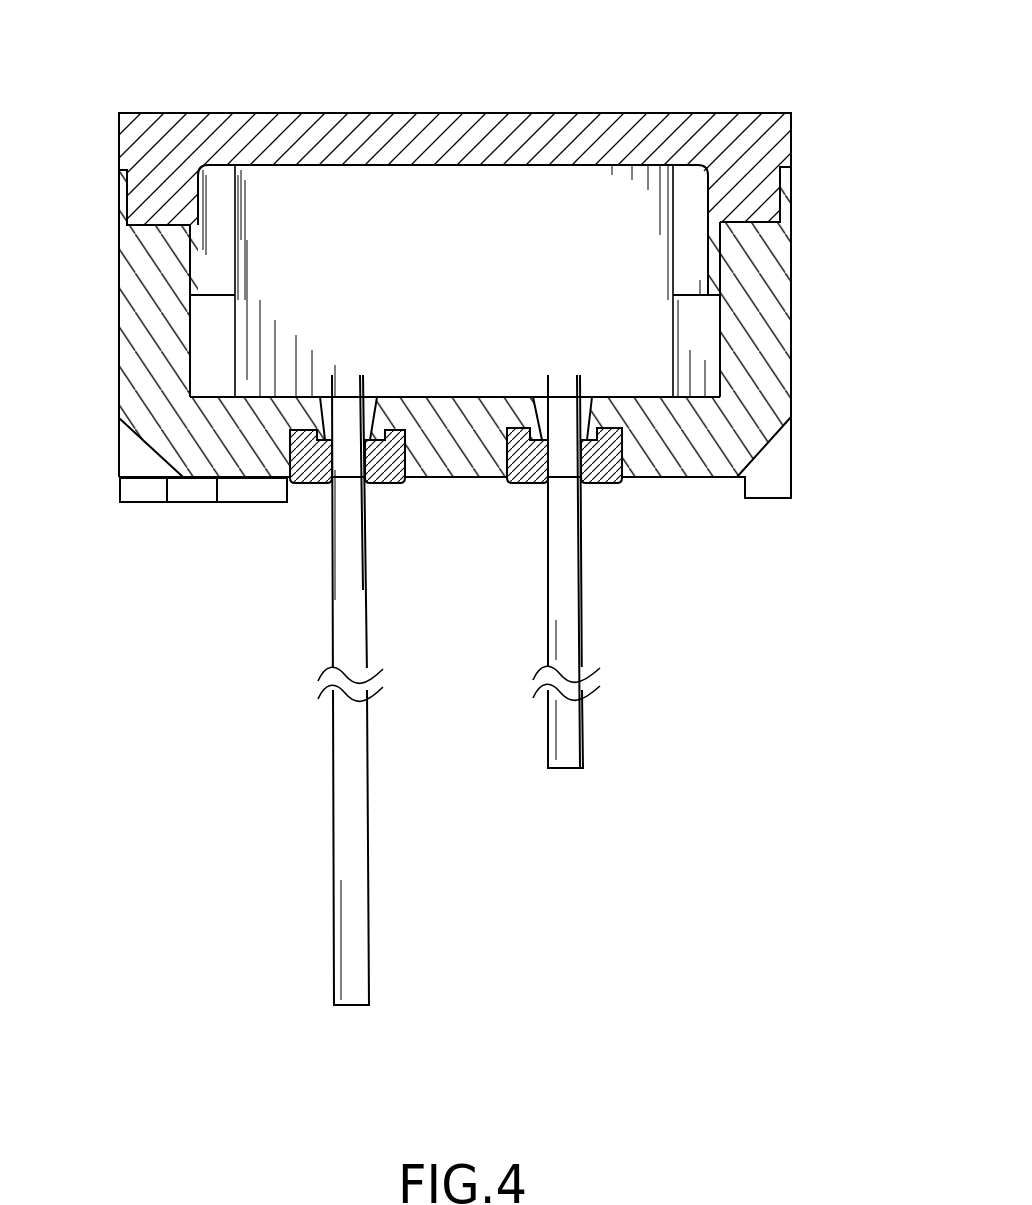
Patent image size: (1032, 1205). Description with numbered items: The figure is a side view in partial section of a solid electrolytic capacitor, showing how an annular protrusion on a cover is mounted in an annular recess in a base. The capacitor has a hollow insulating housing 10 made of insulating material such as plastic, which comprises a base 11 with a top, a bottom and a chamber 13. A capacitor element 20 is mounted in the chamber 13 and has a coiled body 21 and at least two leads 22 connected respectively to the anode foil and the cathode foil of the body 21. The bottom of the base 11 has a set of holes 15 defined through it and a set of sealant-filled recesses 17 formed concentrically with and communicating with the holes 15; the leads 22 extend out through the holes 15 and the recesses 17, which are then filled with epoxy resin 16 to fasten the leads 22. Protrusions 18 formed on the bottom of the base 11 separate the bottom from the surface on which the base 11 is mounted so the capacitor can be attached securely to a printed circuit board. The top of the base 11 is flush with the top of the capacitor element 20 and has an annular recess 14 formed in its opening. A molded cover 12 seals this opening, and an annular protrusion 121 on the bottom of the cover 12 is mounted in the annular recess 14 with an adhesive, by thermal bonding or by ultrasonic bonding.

The insulating housing 10 is at (808, 100).
The base 11 is at (770, 365).
The cover 12 is at (630, 124).
The annular protrusion 121 is at (153, 205).
The chamber 13 is at (720, 340).
The annular recess 14 is at (758, 216).
The holes 15 is at (323, 438).
The epoxy resin 16 is at (385, 483).
The sealant-filled recesses 17 is at (307, 480).
The protrusions 18 is at (137, 497).
The capacitor element 20 is at (481, 160).
The body 21 is at (348, 188).
The leads 22 is at (570, 604).